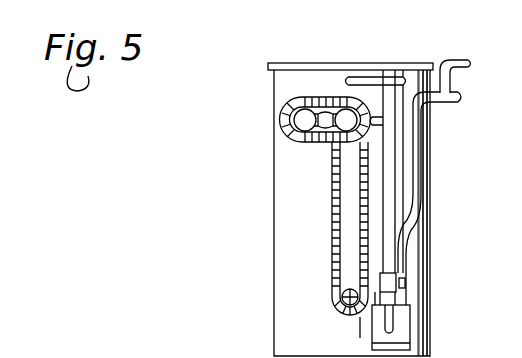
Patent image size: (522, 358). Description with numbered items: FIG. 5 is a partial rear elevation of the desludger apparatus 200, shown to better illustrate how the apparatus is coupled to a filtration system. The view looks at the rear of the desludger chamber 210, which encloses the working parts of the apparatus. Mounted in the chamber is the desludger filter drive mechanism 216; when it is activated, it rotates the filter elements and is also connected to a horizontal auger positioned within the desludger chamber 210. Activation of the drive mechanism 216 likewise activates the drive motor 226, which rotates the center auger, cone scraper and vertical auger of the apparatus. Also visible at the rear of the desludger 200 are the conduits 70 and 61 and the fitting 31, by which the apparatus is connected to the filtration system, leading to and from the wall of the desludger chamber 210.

The housing 200 is at (274, 237).
The desludger filter drive mechanism 216 is at (323, 101).
The drive motor 226 is at (278, 101).
The pipe 70 is at (378, 76).
The pipe 61 is at (462, 57).
The wall 31 is at (423, 161).
The desludger chamber 210 is at (427, 285).